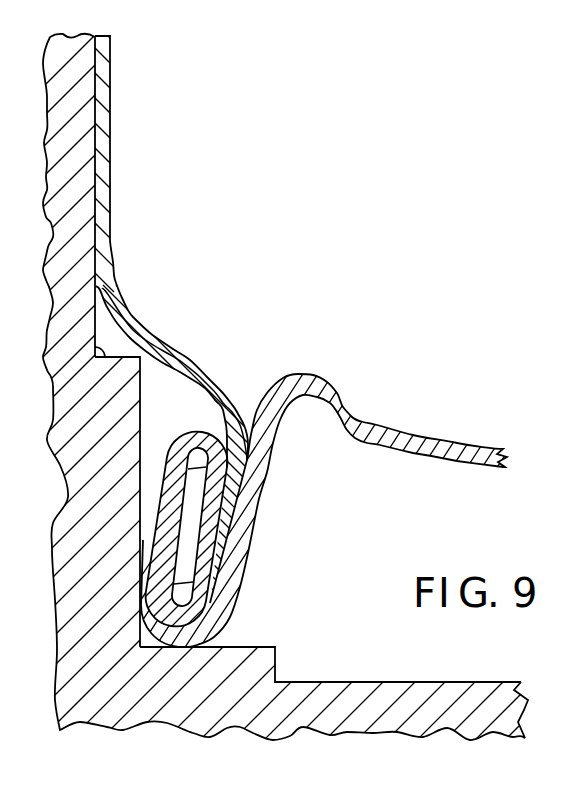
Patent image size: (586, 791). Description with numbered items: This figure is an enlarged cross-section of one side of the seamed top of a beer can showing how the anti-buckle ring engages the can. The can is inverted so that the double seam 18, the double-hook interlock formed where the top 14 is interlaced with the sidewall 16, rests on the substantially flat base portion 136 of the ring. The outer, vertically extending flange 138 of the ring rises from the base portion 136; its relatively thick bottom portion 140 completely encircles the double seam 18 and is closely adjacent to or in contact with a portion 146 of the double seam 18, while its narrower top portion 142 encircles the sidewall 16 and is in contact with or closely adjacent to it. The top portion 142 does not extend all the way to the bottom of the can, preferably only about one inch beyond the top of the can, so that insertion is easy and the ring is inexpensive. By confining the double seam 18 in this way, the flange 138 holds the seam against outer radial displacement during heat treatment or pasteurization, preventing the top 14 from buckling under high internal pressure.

The top 14 is at (427, 452).
The sidewall 16 is at (112, 213).
The double seam 18 is at (197, 432).
The base portion 136 is at (253, 646).
The flange 138 is at (72, 512).
The bottom portion 140 is at (132, 394).
The top portion 142 is at (104, 362).
The portion of the double seam 146 is at (148, 597).